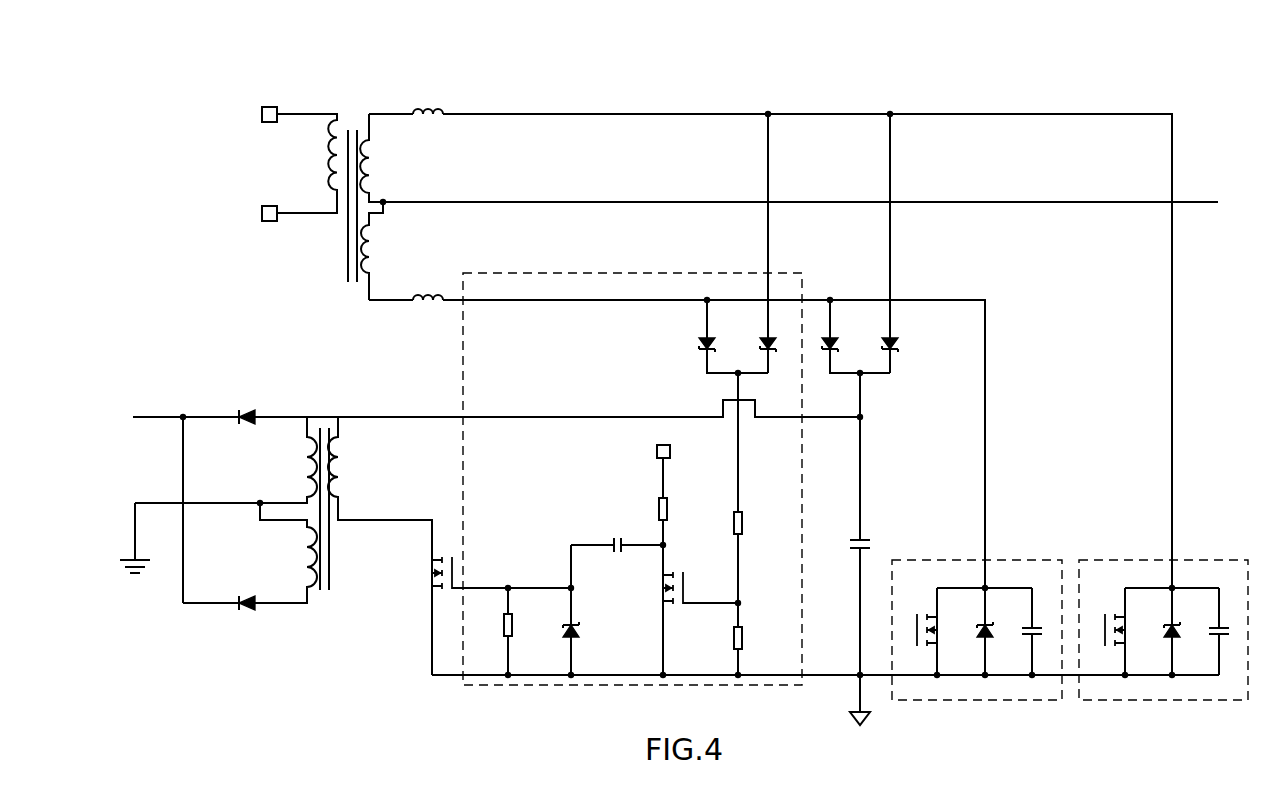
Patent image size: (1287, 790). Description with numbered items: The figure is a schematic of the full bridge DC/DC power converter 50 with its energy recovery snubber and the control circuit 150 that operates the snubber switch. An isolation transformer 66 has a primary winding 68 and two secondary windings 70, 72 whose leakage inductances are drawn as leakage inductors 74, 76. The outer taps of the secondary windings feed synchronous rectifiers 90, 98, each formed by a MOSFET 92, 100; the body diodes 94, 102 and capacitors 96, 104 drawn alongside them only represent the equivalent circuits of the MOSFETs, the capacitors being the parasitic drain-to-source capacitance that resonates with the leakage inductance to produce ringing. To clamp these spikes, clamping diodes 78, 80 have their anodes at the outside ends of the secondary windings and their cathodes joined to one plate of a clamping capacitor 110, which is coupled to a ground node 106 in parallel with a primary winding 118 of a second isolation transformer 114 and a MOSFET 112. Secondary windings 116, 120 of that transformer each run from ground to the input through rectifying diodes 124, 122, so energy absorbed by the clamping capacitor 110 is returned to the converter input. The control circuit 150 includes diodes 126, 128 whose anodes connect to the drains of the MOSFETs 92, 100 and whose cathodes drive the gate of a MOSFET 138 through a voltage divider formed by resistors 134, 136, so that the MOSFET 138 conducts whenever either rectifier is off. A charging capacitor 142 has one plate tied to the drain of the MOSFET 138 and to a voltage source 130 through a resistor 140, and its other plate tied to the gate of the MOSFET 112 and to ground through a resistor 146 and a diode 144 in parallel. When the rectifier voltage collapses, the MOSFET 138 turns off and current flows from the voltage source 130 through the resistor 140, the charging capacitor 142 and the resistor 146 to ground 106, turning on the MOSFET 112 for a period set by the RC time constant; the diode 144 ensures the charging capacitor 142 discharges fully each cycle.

The power converter 50 is at (1222, 125).
The isolation transformer 66 is at (380, 76).
The primary winding 68 is at (332, 124).
The secondary winding 70 is at (371, 165).
The secondary winding 72 is at (369, 275).
The leakage inductor 74 is at (445, 112).
The leakage inductor 76 is at (444, 300).
The clamping diode 78 is at (830, 358).
The clamping diode 80 is at (893, 354).
The synchronous rectifier 90 is at (1000, 700).
The MOSFET 92 is at (935, 617).
The body diode 94 is at (991, 629).
The capacitor 96 is at (1036, 626).
The synchronous rectifier 98 is at (1168, 700).
The MOSFET 100 is at (1122, 617).
The body diode 102 is at (1178, 629).
The capacitor 104 is at (1222, 626).
The ground node 106 is at (858, 704).
The clamping capacitor 110 is at (854, 549).
The MOSFET 112 is at (430, 590).
The isolation transformer 114 is at (298, 396).
The secondary winding 116 is at (306, 444).
The primary winding 118 is at (343, 440).
The secondary winding 120 is at (319, 590).
The rectifying diode 122 is at (246, 610).
The rectifying diode 124 is at (246, 409).
The diode 126 is at (697, 344).
The diode 128 is at (760, 343).
The voltage source 130 is at (672, 452).
The resistor 134 is at (743, 521).
The resistor 136 is at (743, 637).
The MOSFET 138 is at (668, 606).
The resistor 140 is at (668, 508).
The charging capacitor 142 is at (618, 554).
The diode 144 is at (580, 634).
The resistor 146 is at (505, 622).
The control circuit 150 is at (630, 688).